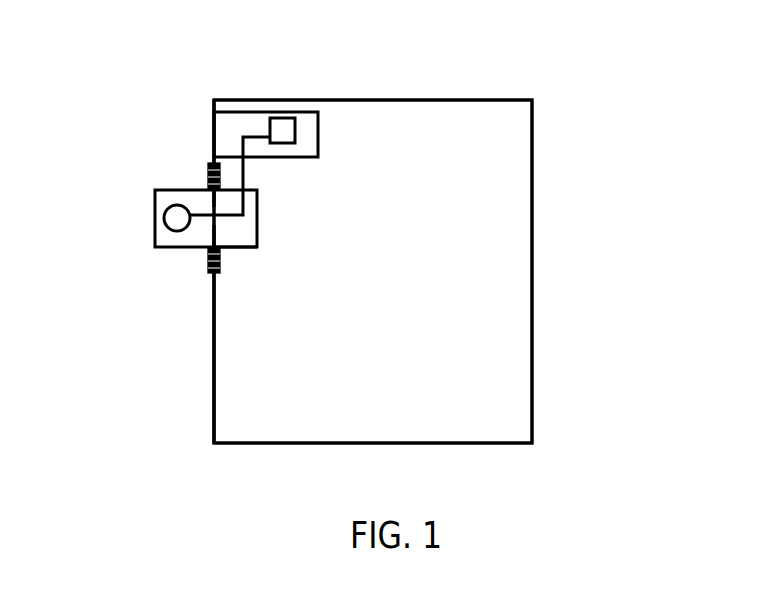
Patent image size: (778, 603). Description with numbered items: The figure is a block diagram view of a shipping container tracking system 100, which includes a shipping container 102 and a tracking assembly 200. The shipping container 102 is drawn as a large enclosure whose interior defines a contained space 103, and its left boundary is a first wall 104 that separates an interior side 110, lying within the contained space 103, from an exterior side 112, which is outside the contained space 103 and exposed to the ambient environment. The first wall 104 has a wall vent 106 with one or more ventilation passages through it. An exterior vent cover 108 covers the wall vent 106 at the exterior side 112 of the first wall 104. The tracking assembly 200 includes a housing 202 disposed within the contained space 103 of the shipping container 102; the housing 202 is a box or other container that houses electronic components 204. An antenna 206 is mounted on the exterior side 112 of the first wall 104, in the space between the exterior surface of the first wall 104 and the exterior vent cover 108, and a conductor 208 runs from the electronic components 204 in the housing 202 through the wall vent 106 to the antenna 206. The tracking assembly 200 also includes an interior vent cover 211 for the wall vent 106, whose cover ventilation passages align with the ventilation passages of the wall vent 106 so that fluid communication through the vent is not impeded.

The shipping container tracking system 100 is at (595, 84).
The shipping container 102 is at (477, 443).
The contained space 103 is at (437, 320).
The first wall 104 is at (212, 383).
The wall vent 106 is at (215, 228).
The exterior vent cover 108 is at (180, 247).
The interior side 110 is at (258, 355).
The exterior side 112 is at (193, 342).
The tracking assembly 200 is at (156, 141).
The housing 202 is at (318, 145).
The electronic components 204 is at (283, 128).
The antenna 206 is at (170, 215).
The conductor 208 is at (247, 173).
The interior vent cover 211 is at (242, 247).